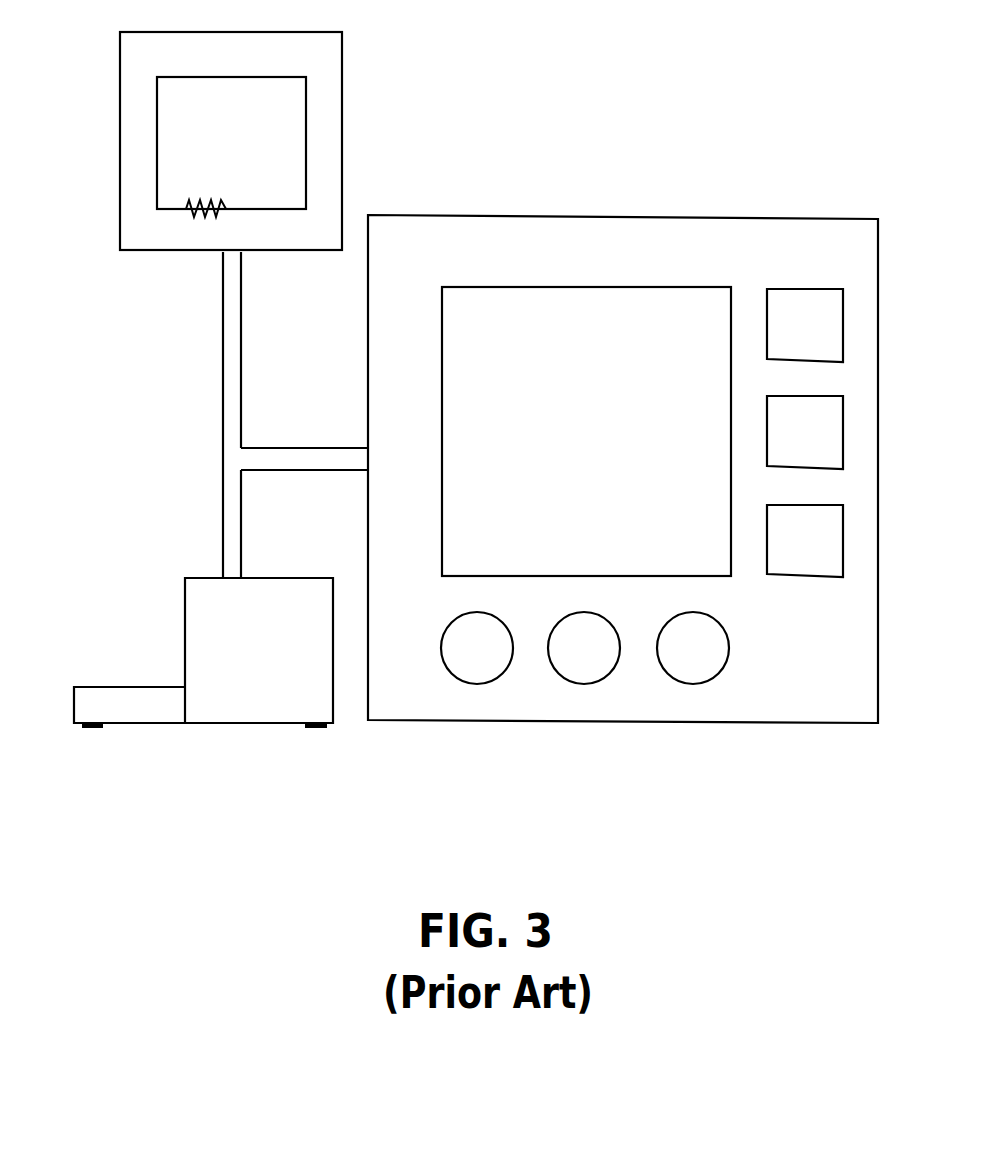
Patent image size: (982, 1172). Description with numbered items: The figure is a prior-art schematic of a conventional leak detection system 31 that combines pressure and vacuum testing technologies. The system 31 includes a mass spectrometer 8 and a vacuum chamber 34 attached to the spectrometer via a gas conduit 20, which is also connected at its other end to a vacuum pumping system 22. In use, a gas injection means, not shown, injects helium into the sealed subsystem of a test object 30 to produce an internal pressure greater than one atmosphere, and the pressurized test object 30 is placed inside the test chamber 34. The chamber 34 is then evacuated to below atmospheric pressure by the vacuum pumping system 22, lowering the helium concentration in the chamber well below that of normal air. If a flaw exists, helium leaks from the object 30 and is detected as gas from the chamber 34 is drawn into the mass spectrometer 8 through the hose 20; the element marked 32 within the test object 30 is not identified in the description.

The mass spectrometer 8 is at (462, 214).
The gas conduit 20 is at (337, 448).
The vacuum pumping system 22 is at (320, 578).
The test object 30 is at (157, 140).
The leak detection system 31 is at (623, 432).
The heating element / resistor 32 is at (222, 212).
The vacuum chamber 34 is at (120, 42).